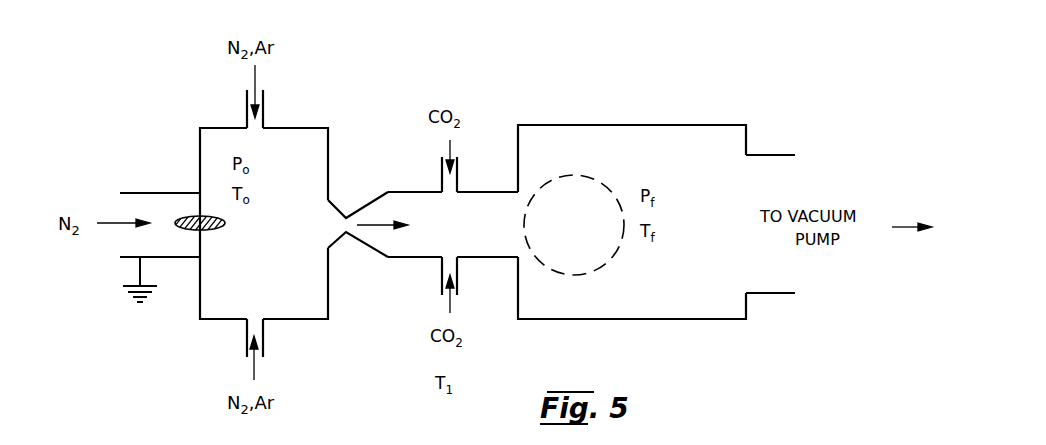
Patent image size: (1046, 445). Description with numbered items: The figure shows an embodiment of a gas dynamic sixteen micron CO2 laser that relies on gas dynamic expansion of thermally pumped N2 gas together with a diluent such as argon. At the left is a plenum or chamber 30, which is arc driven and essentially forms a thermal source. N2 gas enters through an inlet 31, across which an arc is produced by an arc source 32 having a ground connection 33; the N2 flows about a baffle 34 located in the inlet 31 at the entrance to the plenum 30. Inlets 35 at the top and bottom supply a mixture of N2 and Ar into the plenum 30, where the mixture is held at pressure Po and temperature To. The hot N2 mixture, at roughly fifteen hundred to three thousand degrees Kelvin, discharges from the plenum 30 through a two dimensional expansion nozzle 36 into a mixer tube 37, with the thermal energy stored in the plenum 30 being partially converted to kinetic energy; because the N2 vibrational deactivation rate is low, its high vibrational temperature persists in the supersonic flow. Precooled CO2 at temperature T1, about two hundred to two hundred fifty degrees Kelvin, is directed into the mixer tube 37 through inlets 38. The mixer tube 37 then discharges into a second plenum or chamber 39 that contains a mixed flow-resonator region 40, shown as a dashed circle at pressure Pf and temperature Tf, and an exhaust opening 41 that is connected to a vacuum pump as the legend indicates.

The plenum 30 is at (200, 292).
The inlet 31 is at (201, 254).
The arc source 32 is at (148, 193).
The ground connection 33 is at (133, 270).
The baffle 34 is at (208, 230).
The inlets 35 is at (263, 105).
The two dimensional expansion nozzle 36 is at (339, 212).
The mixer tube 37 is at (470, 258).
The inlets 38 is at (457, 177).
The plenum 39 is at (555, 124).
The mixed flow-resonator region 40 is at (567, 212).
The exhaust opening 41 is at (778, 292).